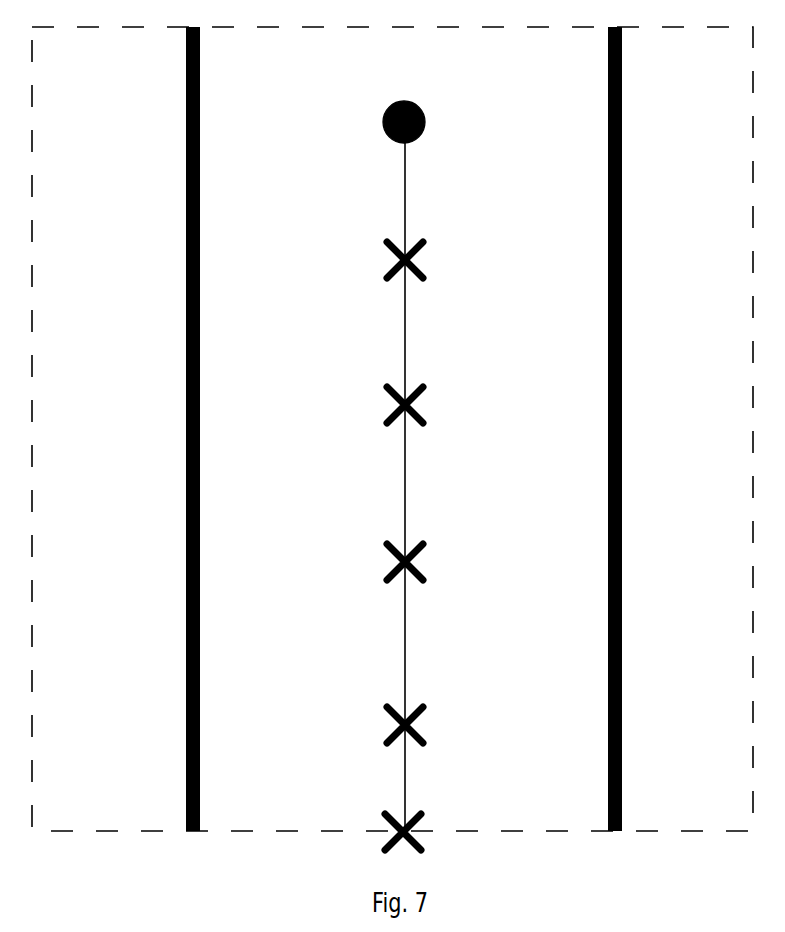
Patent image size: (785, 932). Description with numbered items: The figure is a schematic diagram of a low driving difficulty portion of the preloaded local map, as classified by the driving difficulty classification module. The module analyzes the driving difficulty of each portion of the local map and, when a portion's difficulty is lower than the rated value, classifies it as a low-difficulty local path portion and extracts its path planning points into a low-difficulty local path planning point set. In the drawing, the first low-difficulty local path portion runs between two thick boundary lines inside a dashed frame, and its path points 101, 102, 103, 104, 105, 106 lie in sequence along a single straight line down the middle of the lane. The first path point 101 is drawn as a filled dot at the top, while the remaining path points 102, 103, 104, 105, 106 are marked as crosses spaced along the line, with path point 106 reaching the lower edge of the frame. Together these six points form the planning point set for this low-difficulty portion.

The path point of the first low-difficulty local path portion 101 is at (383, 122).
The path point of the first low-difficulty local path portion 102 is at (413, 257).
The path point of the first low-difficulty local path portion 103 is at (415, 407).
The path point of the first low-difficulty local path portion 104 is at (418, 565).
The path point of the first low-difficulty local path portion 105 is at (417, 727).
The path point of the first low-difficulty local path portion 106 is at (395, 825).